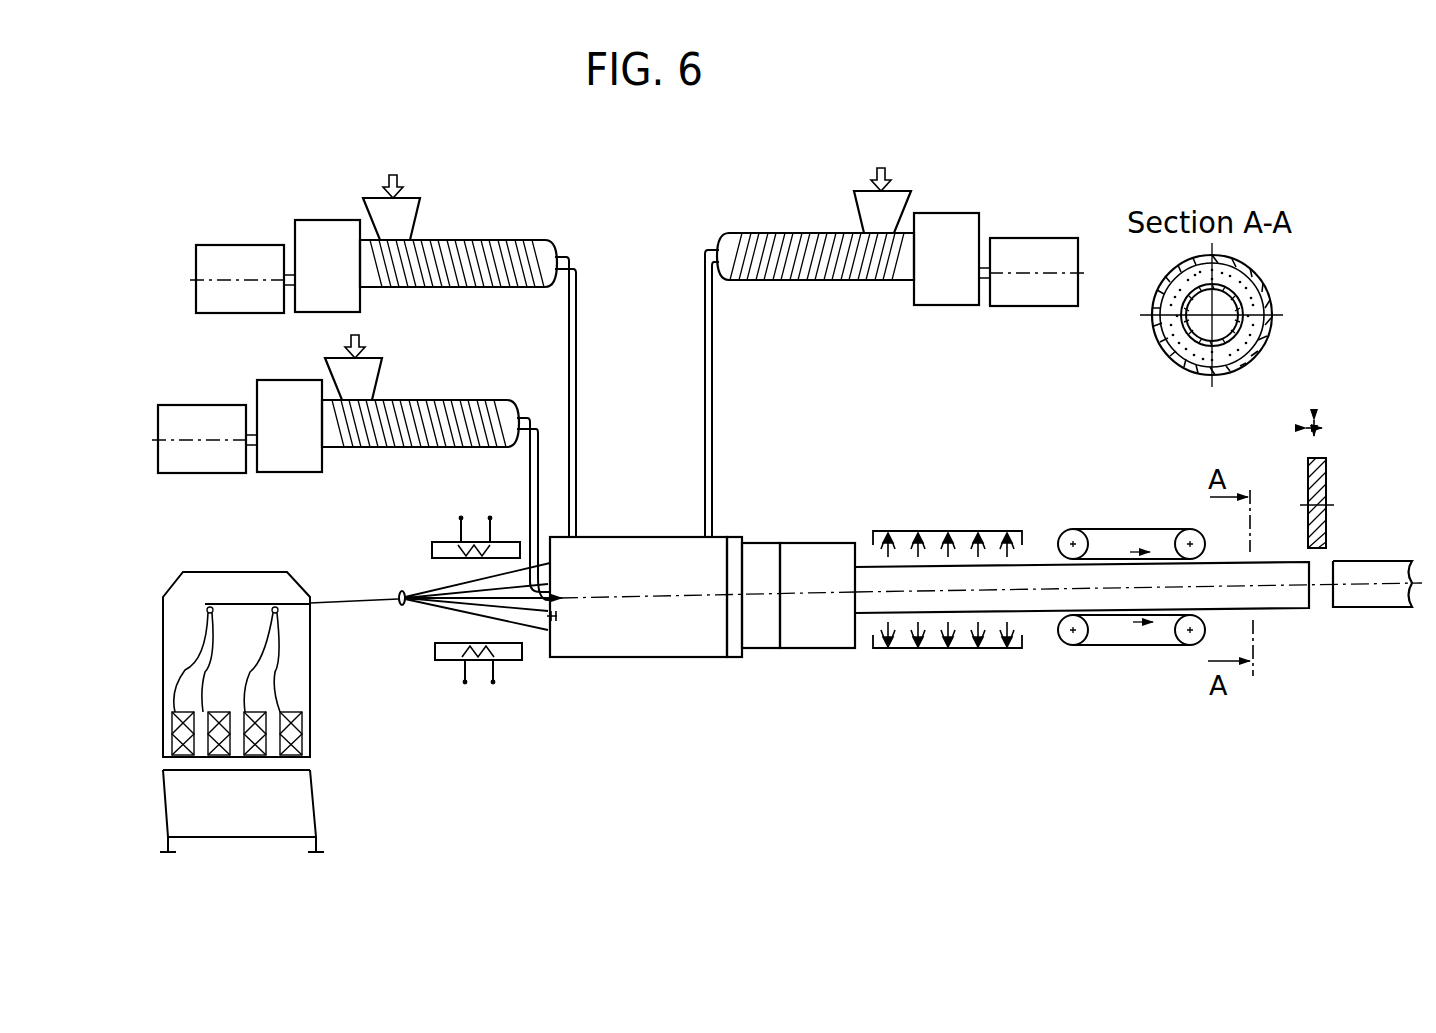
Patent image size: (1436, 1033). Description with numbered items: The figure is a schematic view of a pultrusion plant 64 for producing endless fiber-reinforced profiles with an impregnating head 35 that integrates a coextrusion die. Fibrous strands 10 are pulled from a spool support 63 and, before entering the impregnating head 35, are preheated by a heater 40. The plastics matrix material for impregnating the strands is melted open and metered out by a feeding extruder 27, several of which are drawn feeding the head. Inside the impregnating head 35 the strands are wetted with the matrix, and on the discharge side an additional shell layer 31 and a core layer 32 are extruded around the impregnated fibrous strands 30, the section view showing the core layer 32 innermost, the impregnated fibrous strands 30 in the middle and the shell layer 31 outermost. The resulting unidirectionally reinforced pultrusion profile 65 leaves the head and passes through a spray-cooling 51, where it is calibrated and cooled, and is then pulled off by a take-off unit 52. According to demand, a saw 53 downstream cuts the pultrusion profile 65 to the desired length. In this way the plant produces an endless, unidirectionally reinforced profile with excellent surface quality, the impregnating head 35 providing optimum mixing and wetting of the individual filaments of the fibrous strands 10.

The feeding extruder 27 is at (292, 200).
The impregnating head 35 is at (721, 660).
The pultrusion plant 64 is at (844, 712).
The fibrous strands 10 is at (541, 640).
The heater 40 is at (511, 657).
The spray-cooling 51 is at (960, 642).
The take-off unit 52 is at (1131, 634).
The pultrusion profile 65 is at (1375, 600).
The saw 53 is at (1326, 483).
The shell layer 31 is at (1258, 270).
The impregnated fibrous strands 30 is at (1250, 305).
The core layer 32 is at (1243, 323).
The spool support 63 is at (297, 690).